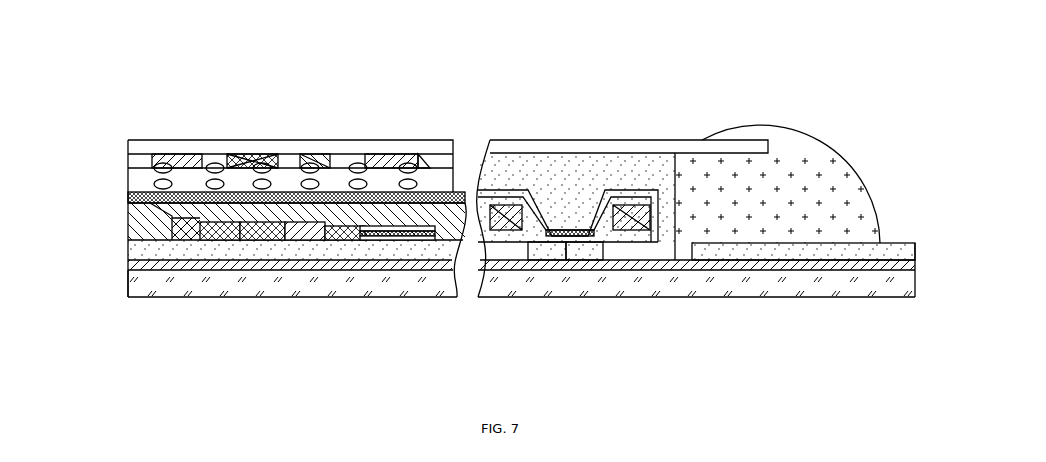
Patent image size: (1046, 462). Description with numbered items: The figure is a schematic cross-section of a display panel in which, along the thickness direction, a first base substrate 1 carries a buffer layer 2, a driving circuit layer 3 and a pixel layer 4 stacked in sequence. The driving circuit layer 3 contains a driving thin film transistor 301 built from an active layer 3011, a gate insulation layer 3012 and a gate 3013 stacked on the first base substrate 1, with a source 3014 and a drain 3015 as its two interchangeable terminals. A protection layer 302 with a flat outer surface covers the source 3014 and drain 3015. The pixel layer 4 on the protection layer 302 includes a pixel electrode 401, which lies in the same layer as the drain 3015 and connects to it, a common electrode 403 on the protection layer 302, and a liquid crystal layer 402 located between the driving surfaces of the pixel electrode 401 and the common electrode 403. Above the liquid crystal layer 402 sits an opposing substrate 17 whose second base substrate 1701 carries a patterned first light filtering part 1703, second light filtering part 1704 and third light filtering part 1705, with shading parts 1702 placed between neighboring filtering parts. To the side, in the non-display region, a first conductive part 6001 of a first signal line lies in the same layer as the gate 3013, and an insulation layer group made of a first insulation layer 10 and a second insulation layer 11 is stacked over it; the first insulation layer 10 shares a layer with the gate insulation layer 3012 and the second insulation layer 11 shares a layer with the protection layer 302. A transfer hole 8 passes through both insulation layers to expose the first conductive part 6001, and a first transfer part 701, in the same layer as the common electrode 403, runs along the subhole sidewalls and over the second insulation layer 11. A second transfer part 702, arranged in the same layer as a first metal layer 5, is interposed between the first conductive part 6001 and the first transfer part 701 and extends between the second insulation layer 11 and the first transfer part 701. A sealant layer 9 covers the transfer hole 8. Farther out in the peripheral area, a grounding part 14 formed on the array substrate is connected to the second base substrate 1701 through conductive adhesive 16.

The first base substrate 1 is at (133, 289).
The buffer layer 2 is at (133, 264).
The driving circuit layer 3 is at (265, 265).
The driving thin film transistor 301 is at (257, 283).
The protection layer 302 is at (133, 222).
The active layer 3011 is at (213, 232).
The gate insulation layer 3012 is at (257, 232).
The gate 3013 is at (295, 232).
The source 3014 is at (178, 232).
The drain 3015 is at (340, 232).
The pixel layer 4 is at (414, 285).
The pixel electrode 401 is at (385, 226).
The liquid crystal layer 402 is at (418, 210).
The common electrode 403 is at (450, 226).
The first metal layer 5 is at (140, 204).
The opposing substrate 17 is at (296, 131).
The second base substrate 1701 is at (420, 165).
The shading part 1702 is at (368, 165).
The first light filtering part 1703 is at (176, 164).
The second light filtering part 1704 is at (249, 166).
The third light filtering part 1705 is at (326, 165).
The sealant layer 9 is at (484, 196).
The second insulation layer 11 is at (509, 212).
The first insulation layer 10 is at (538, 228).
The first transfer part 701 is at (571, 230).
The first conductive part 6001 is at (620, 200).
The transfer hole 8 is at (548, 250).
The second transfer part 702 is at (590, 250).
The conductive adhesive 16 is at (833, 235).
The grounding part 14 is at (893, 250).